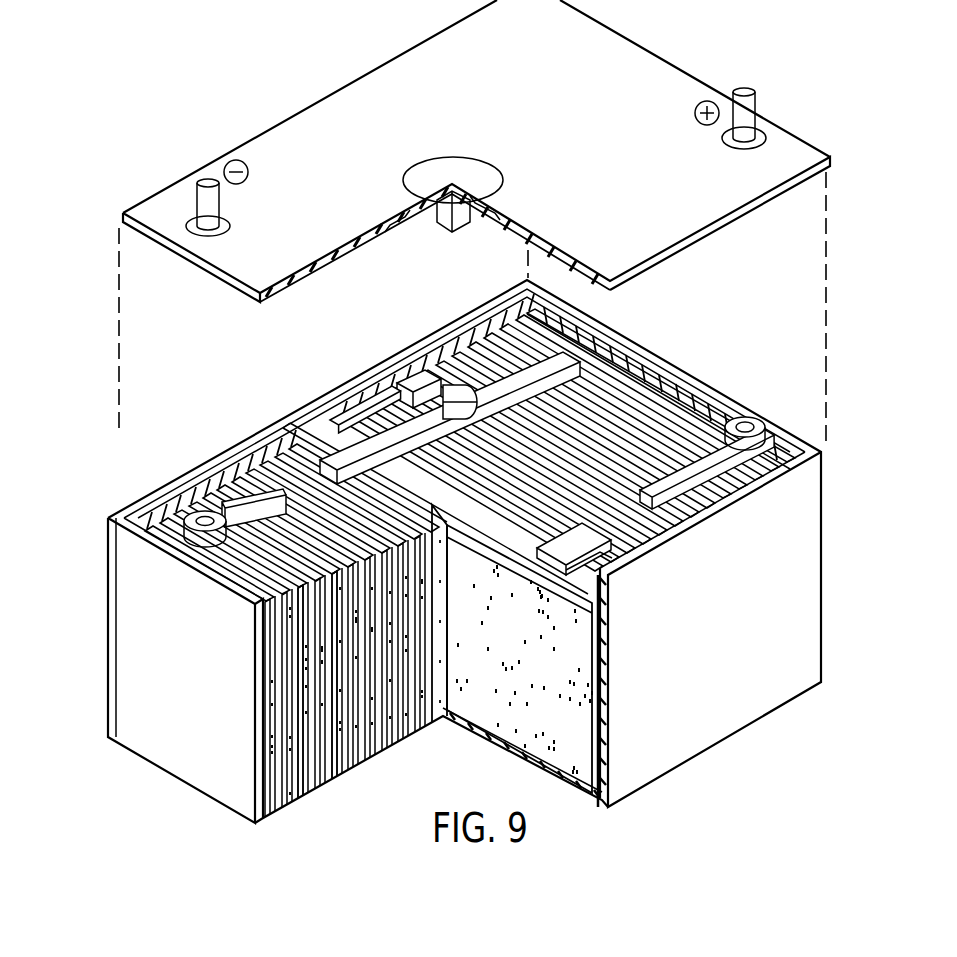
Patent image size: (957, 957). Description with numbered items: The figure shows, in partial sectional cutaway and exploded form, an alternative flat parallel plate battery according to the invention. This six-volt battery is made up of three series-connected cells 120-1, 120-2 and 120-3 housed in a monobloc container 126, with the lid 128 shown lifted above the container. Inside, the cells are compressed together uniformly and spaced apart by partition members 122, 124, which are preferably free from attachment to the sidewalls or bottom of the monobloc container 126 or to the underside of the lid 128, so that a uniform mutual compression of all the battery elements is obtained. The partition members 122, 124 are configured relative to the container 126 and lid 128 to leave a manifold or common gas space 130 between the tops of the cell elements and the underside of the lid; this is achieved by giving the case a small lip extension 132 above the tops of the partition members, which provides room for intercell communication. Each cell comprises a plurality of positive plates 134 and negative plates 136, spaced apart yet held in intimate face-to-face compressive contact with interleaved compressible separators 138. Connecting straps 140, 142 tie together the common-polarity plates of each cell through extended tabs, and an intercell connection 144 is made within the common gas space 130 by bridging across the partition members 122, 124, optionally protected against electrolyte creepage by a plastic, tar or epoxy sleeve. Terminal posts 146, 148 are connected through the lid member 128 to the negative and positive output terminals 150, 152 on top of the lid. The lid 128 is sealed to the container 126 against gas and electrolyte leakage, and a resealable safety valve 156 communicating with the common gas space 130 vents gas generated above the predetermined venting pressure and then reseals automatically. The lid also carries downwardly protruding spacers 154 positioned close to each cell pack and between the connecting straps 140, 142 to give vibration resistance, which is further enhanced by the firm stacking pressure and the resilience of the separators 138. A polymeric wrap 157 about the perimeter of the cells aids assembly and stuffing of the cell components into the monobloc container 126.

The lid 128 is at (667, 75).
The negative output terminal 150 is at (213, 207).
The positive output terminal 152 is at (757, 110).
The resealable safety valve 156 is at (480, 185).
The spacers 154 is at (337, 269).
The intercell connection 144 is at (438, 376).
The partition member 124 is at (405, 400).
The connecting strap 142 is at (363, 400).
The common gas space 130 is at (363, 400).
The partition member 122 is at (277, 497).
The lip extension 132 is at (253, 452).
The connecting strap 140 is at (240, 505).
The negative terminal post 146 is at (184, 514).
The positive terminal post 148 is at (757, 424).
The polymeric wrap 157 is at (610, 676).
The monobloc container 126 is at (782, 683).
The first cell 120-1 is at (347, 743).
The second cell 120-2 is at (425, 650).
The third cell 120-3 is at (662, 412).
The positive plates 134 is at (393, 742).
The compressible separators 138 is at (330, 745).
The negative plates 136 is at (303, 767).